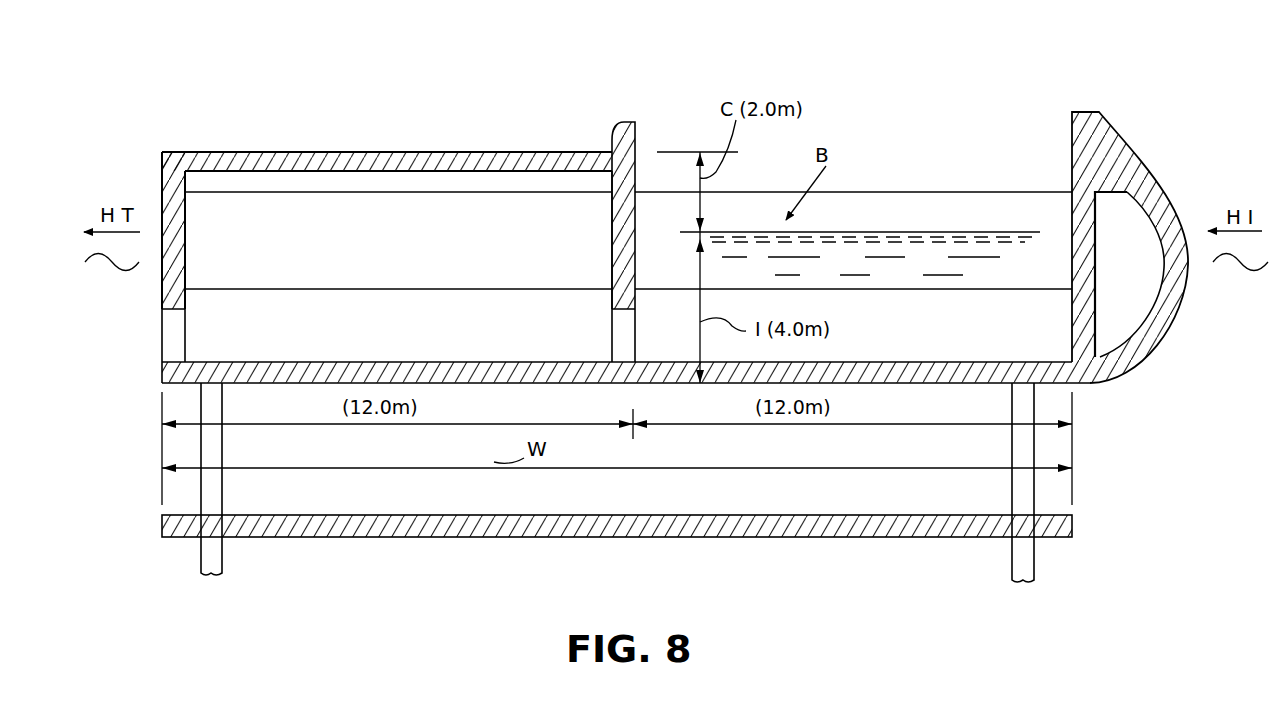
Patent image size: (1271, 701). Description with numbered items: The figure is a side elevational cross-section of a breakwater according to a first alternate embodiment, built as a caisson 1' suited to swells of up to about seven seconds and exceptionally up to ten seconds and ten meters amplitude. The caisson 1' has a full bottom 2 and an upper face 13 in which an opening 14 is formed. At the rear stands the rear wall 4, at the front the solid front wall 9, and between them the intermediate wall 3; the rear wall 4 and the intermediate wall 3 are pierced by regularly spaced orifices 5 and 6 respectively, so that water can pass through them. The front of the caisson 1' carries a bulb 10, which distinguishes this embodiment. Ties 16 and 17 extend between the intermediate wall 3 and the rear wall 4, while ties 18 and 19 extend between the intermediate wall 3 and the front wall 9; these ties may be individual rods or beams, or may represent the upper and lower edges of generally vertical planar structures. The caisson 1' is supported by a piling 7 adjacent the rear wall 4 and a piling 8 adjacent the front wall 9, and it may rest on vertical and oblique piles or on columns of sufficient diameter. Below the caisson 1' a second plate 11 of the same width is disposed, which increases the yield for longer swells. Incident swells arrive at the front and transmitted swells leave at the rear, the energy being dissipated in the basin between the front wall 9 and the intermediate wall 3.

The caisson 1' is at (653, 304).
The bottom 2 is at (950, 384).
The intermediate wall 3 is at (620, 218).
The rear wall 4 is at (170, 198).
The orifices 5 is at (172, 310).
The orifices 6 is at (612, 318).
The piling 7 is at (218, 497).
The piling 8 is at (1018, 485).
The front wall 9 is at (1072, 306).
The bulb 10 is at (1118, 152).
The second plate 11 is at (900, 540).
The upper face 13 is at (302, 156).
The opening 14 is at (637, 158).
The tie 16 is at (344, 194).
The tie 17 is at (486, 289).
The tie 18 is at (934, 192).
The tie 19 is at (904, 290).